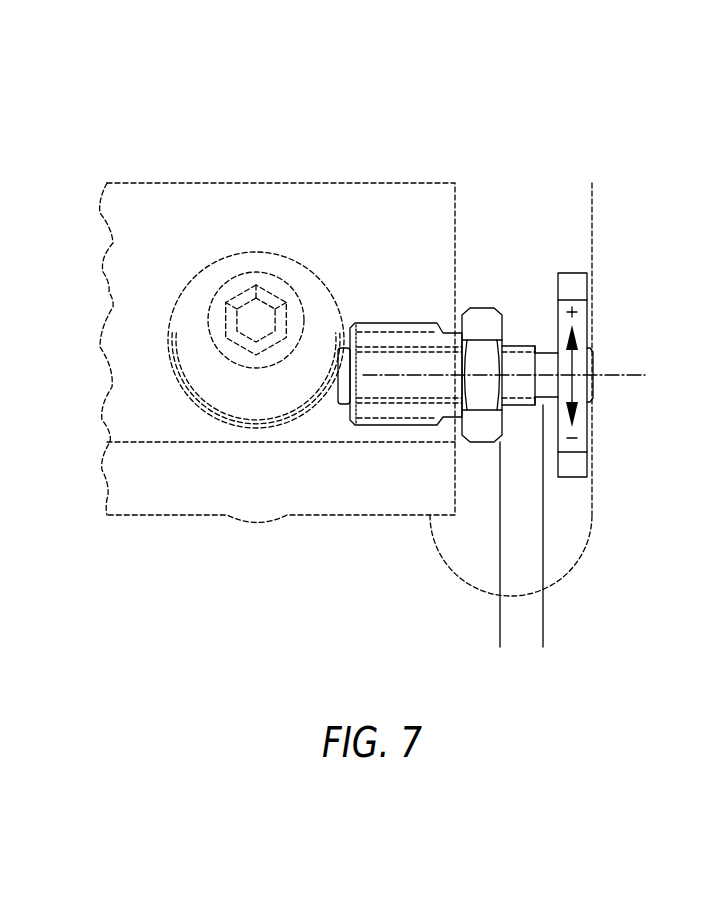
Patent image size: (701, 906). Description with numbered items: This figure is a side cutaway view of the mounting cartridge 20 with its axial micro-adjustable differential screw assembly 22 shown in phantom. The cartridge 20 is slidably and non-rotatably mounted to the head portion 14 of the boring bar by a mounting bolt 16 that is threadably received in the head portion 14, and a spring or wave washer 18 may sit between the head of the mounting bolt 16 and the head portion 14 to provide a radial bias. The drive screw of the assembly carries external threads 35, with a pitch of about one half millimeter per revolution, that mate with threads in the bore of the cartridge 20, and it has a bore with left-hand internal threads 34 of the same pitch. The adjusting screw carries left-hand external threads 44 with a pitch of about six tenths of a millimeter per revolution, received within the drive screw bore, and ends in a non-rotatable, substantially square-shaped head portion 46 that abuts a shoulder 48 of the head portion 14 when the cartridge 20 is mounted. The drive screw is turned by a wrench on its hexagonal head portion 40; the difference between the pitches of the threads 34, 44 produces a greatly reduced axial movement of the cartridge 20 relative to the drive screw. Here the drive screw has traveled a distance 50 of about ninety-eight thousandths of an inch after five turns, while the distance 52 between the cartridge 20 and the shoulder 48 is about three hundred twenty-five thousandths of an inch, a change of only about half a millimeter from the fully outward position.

The head portion 14 is at (316, 183).
The mounting bolt 16 is at (185, 330).
The spring or wave washer 18 is at (178, 378).
The cartridge 20 is at (211, 140).
The axial micro-adjustable differential screw assembly 22 is at (645, 320).
The internal threads 34 is at (421, 332).
The external threads 35 is at (400, 323).
The hexagonal head portion 40 is at (487, 300).
The external threads 44 is at (372, 332).
The head portion 46 is at (596, 456).
The shoulder 48 is at (578, 494).
The distance 50 is at (463, 632).
The distance 52 is at (585, 208).